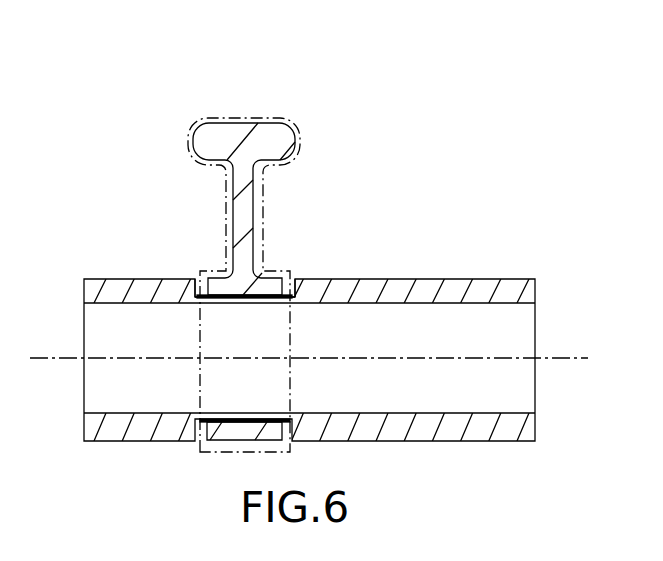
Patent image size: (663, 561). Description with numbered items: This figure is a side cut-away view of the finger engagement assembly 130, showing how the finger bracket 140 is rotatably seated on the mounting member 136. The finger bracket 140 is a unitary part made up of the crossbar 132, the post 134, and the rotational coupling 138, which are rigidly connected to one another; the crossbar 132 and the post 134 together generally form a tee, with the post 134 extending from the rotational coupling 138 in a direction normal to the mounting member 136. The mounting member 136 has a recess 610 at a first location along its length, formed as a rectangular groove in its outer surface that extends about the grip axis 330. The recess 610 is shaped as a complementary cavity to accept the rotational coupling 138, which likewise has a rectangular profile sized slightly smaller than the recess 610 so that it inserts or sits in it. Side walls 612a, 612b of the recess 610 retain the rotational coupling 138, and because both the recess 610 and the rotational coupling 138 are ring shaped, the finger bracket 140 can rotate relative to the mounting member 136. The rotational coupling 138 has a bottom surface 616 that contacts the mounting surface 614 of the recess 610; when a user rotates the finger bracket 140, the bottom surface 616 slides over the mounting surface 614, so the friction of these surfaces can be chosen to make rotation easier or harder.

The finger engagement assembly 130 is at (463, 119).
The crossbar 132 is at (222, 112).
The post 134 is at (248, 226).
The mounting member 136 is at (528, 290).
The rotational coupling 138 is at (263, 284).
The finger bracket 140 is at (297, 119).
The grip axis 330 is at (557, 358).
The recess 610 is at (196, 300).
The side wall 612a is at (191, 283).
The side wall 612b is at (299, 286).
The mounting surface 614 is at (262, 298).
The bottom surface 616 is at (232, 297).